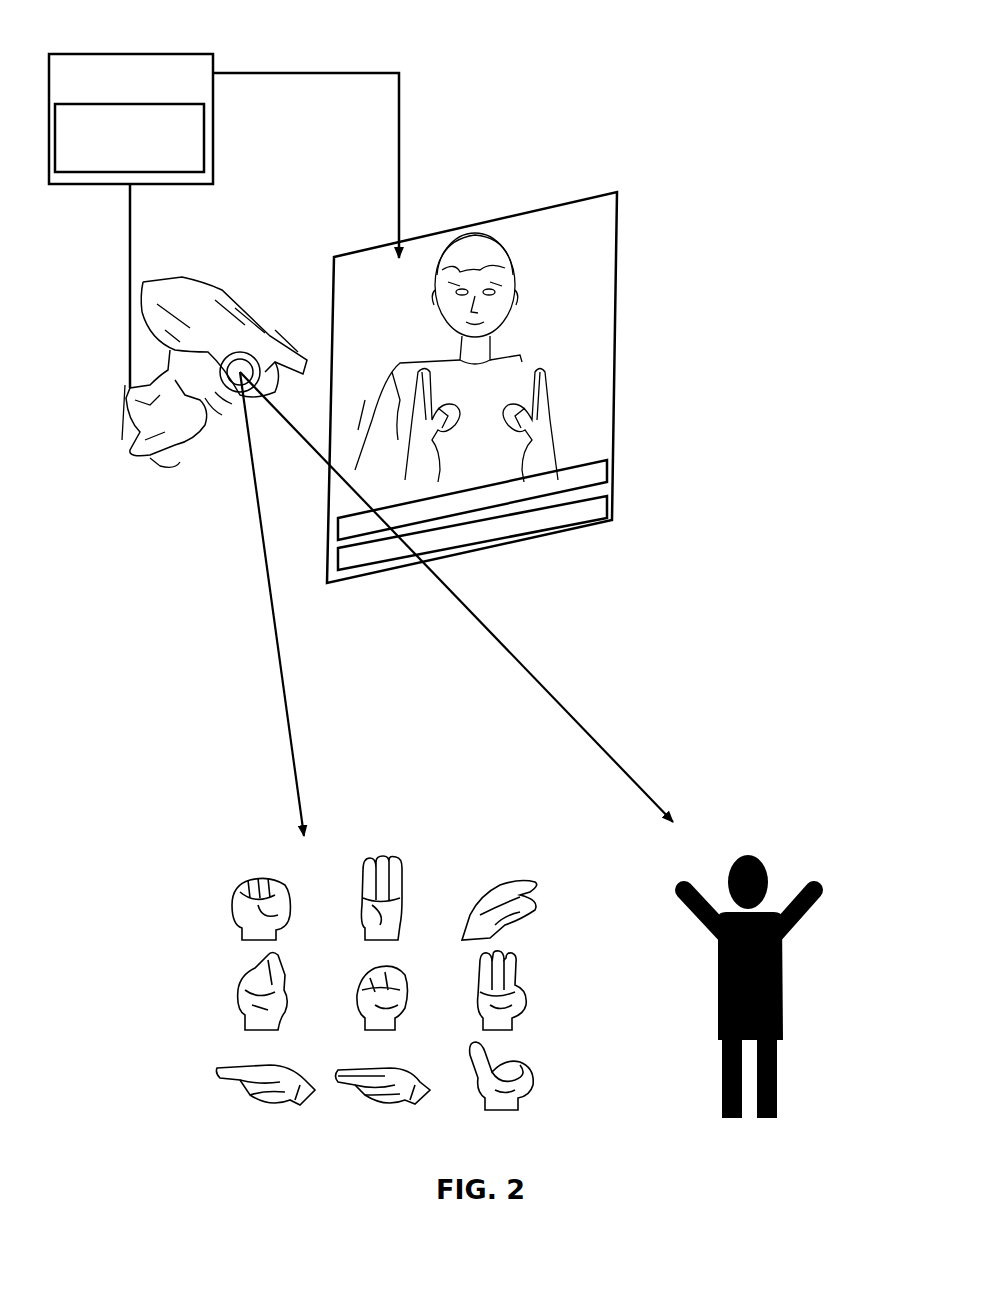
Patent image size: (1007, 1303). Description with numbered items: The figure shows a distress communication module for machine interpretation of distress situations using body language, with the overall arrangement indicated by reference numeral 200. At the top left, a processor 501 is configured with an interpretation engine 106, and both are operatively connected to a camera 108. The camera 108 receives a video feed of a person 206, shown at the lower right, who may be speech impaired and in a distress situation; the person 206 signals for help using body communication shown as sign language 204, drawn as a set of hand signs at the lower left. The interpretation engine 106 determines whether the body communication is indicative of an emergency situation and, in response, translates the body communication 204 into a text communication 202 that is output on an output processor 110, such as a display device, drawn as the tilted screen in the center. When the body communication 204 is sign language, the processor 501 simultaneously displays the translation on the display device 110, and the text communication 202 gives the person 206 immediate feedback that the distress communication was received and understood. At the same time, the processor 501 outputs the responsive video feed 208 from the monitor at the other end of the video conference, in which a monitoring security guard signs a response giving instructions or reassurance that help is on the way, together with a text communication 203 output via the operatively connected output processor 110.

The processor 501 is at (70, 64).
The interpretation engine 106 is at (207, 148).
The camera 108 is at (209, 272).
The system environment 200 is at (512, 166).
The output processor 110 is at (626, 312).
The video feed 208 is at (536, 265).
The text communication 203 is at (613, 455).
The text communication 202 is at (611, 494).
The sign language 204 is at (447, 859).
The person 206 is at (775, 864).